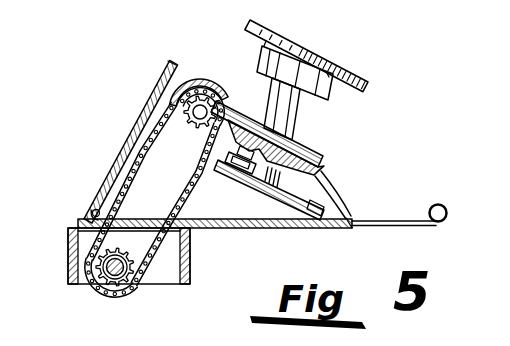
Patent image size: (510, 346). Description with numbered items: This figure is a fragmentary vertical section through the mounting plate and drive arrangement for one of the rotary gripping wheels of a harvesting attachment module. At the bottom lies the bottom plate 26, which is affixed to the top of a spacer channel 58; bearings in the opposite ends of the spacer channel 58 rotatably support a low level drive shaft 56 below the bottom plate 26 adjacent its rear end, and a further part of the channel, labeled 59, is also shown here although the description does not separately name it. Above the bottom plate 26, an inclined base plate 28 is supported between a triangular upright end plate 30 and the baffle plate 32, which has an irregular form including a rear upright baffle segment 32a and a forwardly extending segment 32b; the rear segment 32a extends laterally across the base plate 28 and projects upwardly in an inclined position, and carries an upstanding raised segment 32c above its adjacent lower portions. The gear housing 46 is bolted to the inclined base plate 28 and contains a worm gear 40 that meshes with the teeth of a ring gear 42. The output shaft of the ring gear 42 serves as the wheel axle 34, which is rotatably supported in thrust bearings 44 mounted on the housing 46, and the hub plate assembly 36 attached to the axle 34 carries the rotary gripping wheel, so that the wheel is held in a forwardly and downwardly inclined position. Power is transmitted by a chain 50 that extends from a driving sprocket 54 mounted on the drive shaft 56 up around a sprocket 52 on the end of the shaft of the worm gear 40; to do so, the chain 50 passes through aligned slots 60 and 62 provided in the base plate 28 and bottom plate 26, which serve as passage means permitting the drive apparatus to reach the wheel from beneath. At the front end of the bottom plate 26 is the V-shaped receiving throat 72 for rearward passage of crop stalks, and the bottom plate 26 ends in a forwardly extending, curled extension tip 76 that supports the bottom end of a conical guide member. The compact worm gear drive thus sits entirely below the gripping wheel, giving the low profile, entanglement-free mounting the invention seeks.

The bottom plate 26 is at (270, 228).
The inclined base plate 28 is at (271, 194).
The upright end plate 30 is at (124, 163).
The baffle plate 32 is at (108, 135).
The rear upright baffle segment 32a is at (177, 86).
The forwardly extending segment 32b is at (351, 211).
The raised segment 32c is at (164, 74).
The drive axle 34 is at (304, 112).
The hub plate assembly 36 is at (326, 62).
The worm gear 40 is at (214, 99).
The ring gear 42 is at (322, 160).
The thrust bearing 44 is at (299, 132).
The gear housing 46 is at (324, 176).
The chain 50 is at (180, 192).
The sprocket 52 is at (143, 154).
The driving sprocket 54 is at (134, 262).
The drive shaft 56 is at (108, 272).
The spacer channel 58 is at (190, 249).
The housing wall 59 is at (70, 242).
The slot 60 is at (232, 168).
The slot 62 is at (96, 209).
The V-shaped receiving throat 72 is at (351, 227).
The curled extension tip 76 is at (444, 206).